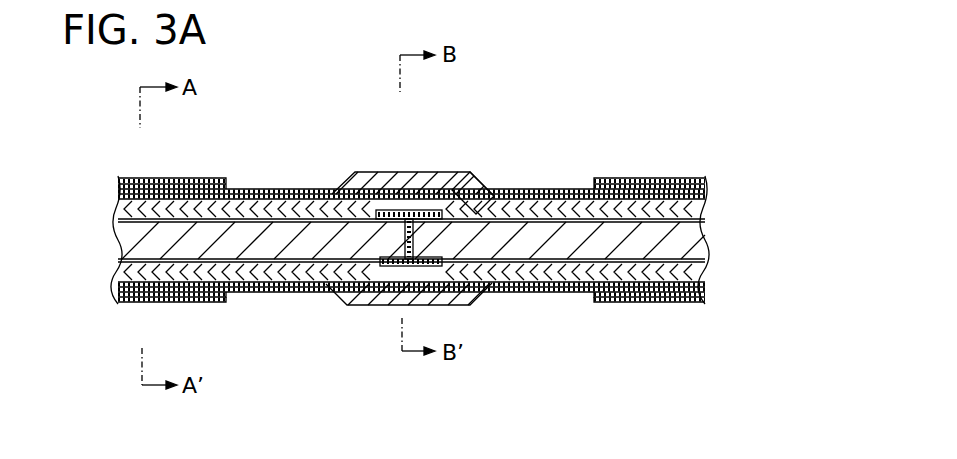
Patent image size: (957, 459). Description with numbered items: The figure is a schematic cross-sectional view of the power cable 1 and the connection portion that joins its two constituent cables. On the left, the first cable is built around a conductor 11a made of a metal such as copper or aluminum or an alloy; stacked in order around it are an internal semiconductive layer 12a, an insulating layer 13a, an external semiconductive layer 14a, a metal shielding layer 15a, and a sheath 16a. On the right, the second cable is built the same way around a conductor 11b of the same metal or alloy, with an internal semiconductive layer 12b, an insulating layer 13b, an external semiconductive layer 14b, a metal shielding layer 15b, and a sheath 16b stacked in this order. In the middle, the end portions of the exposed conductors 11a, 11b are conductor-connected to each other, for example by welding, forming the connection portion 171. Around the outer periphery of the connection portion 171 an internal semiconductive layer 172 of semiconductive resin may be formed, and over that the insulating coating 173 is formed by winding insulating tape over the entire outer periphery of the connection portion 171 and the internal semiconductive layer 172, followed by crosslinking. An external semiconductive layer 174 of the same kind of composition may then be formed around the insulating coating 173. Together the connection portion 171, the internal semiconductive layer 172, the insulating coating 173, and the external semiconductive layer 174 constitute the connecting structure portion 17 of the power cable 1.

The power cable 1 is at (718, 113).
The conductor 11a is at (276, 236).
The conductor 11b is at (536, 236).
The internal semiconductive layer 12a is at (186, 207).
The internal semiconductive layer 12b is at (623, 211).
The insulating layer 13a is at (236, 192).
The insulating layer 13b is at (673, 196).
The external semiconductive layer 14a is at (270, 281).
The external semiconductive layer 14b is at (534, 282).
The metal shielding layer 15a is at (212, 291).
The metal shielding layer 15b is at (592, 292).
The sheath 16a is at (185, 297).
The sheath 16b is at (648, 301).
The connecting structure portion 17 is at (373, 115).
The connection portion 171 is at (410, 238).
The internal semiconductive layer 172 is at (449, 217).
The insulating coating 173 is at (428, 204).
The external semiconductive layer 174 is at (478, 202).